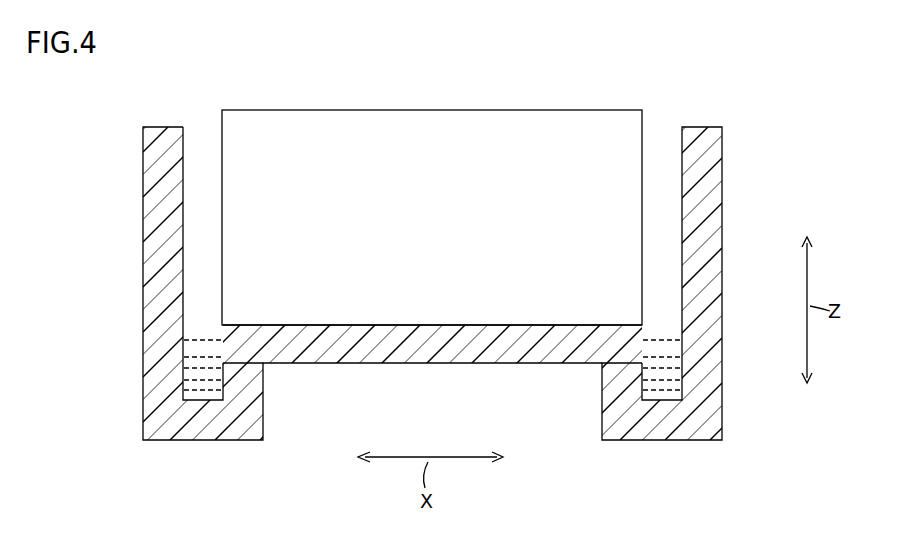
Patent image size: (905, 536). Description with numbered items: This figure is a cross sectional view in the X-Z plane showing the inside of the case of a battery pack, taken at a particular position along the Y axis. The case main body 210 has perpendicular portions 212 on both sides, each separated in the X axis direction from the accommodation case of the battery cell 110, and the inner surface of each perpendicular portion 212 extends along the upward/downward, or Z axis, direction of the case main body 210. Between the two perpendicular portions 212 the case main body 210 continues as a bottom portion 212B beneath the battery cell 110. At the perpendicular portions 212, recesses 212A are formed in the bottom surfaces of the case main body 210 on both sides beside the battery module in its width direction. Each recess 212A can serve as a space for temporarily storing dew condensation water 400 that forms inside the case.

The battery cell 110 is at (433, 130).
The case main body 210 is at (445, 308).
The perpendicular portion 212 is at (157, 267).
The recess 212A is at (190, 372).
The bottom plate portion 212B is at (433, 365).
The dew condensation water 400 is at (206, 390).